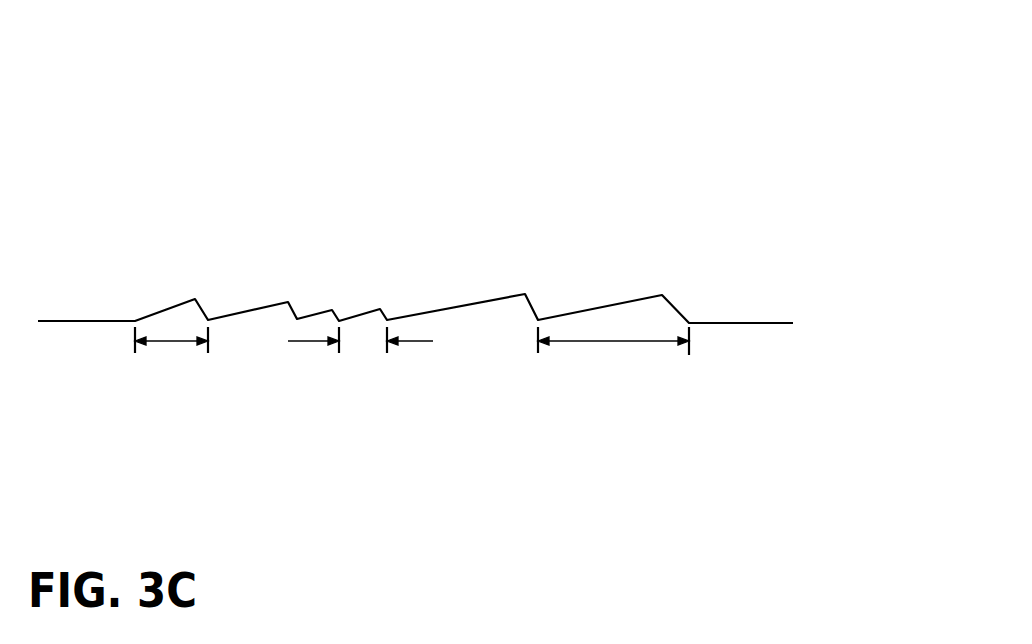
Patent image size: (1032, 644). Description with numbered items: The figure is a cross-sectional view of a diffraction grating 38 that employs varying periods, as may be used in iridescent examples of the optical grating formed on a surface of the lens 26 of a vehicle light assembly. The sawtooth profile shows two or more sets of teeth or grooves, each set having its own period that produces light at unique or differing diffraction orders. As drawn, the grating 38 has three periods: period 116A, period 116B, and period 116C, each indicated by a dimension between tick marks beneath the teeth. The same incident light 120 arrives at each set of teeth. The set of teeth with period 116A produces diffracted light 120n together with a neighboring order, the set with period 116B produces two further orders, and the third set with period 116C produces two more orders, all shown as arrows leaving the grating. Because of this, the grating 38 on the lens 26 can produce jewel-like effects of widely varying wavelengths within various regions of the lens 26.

The incident light 120 is at (136, 302).
The diffracted light 120n is at (155, 302).
The diffraction grating 38 is at (676, 150).
The lens 26 is at (723, 198).
The period 116A is at (168, 343).
The period 116B is at (308, 343).
The period 116C is at (593, 343).